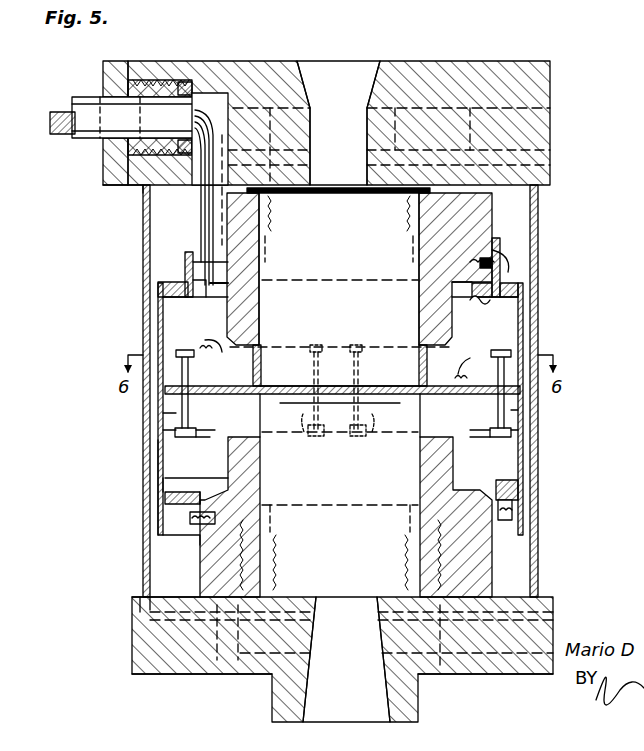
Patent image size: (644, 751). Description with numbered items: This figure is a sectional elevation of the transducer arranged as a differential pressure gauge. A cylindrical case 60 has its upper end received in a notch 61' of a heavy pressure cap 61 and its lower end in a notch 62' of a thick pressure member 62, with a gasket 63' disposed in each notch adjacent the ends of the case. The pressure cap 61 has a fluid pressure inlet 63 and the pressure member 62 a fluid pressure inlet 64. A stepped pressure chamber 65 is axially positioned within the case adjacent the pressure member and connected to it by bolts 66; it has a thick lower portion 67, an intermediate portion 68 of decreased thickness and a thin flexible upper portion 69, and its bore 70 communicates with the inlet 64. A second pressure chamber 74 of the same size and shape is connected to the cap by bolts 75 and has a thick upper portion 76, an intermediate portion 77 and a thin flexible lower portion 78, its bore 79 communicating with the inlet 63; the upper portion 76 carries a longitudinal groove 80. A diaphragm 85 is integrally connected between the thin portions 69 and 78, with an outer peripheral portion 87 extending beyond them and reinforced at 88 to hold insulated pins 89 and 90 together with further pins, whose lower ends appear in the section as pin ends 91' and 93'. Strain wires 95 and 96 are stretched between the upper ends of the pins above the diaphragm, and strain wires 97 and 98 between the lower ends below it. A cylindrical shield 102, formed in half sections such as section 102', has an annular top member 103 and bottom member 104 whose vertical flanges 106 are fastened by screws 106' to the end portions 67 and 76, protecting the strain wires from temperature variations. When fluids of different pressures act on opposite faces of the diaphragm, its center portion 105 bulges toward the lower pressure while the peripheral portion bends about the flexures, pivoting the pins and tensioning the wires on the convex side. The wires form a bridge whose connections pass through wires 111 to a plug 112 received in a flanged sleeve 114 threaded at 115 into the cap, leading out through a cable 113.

The pressure cap 61 is at (339, 110).
The fluid pressure inlet 63 is at (354, 108).
The flanged sleeve 114 is at (112, 64).
The threads 115 is at (162, 82).
The plug 112 is at (88, 100).
The cable 113 is at (58, 114).
The wires 111 is at (215, 225).
The gasket 63' is at (99, 406).
The notch 61' is at (110, 205).
The cylindrical case 60 is at (140, 243).
The bolts 75 is at (405, 212).
The bore 79 is at (339, 269).
The cylindrical shield 102 is at (122, 409).
The half section 102' is at (557, 391).
The longitudinal groove 80 is at (185, 258).
The annular top member 103 is at (162, 292).
The strain wire 95 is at (210, 350).
The strain wire 96 is at (460, 362).
The second pressure chamber 74 is at (497, 238).
The thick upper portion 76 is at (508, 260).
The intermediate portion 77 is at (445, 315).
The vertical flanges 106 is at (362, 399).
The screws 106' is at (334, 411).
The thin flexible lower portion 78 is at (428, 387).
The diaphragm 85 is at (302, 386).
The center portion 105 is at (340, 384).
The left contact 91' is at (298, 439).
The right contact 93' is at (368, 439).
The outer peripheral portion 87 is at (238, 385).
The reinforcement 88 is at (170, 412).
The insulated pin 89 is at (165, 428).
The strain wire 97 is at (208, 440).
The strain wire 98 is at (458, 432).
The insulated pin 90 is at (512, 424).
The thin flexible upper portion 69 is at (250, 428).
The intermediate portion 68 is at (232, 464).
The annular bottom member 104 is at (178, 480).
The stepped pressure chamber 65 is at (195, 540).
The thick lower portion 67 is at (200, 570).
The bore 70 is at (340, 472).
The pressure member 62 is at (305, 659).
The notch 62' is at (111, 610).
The fluid pressure inlet 64 is at (320, 701).
The bolts 66 is at (190, 677).